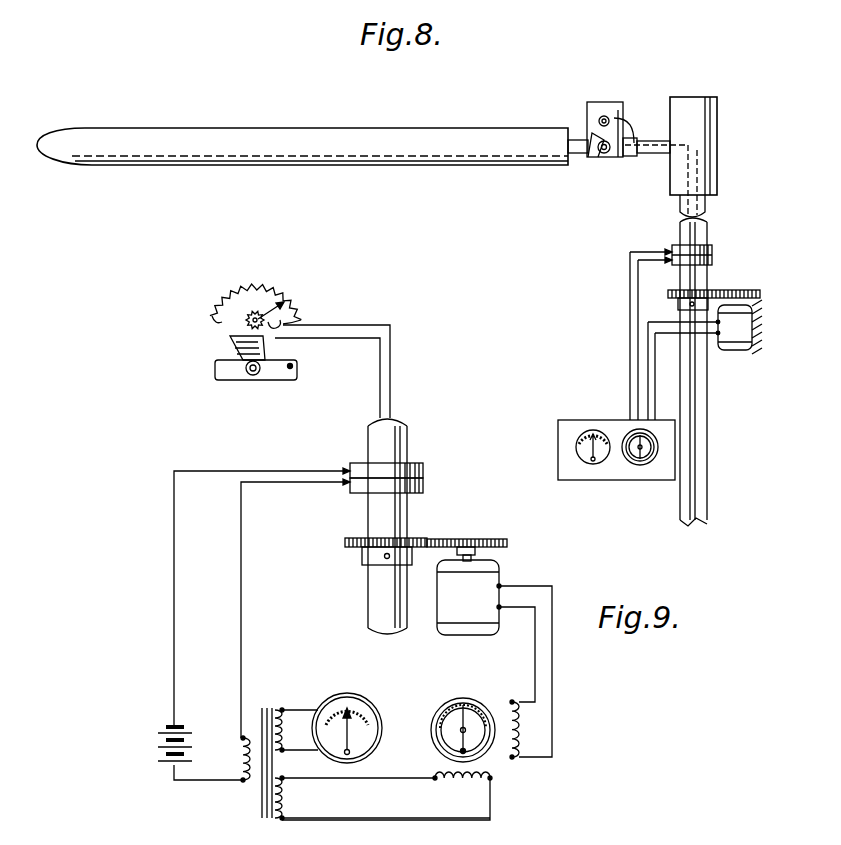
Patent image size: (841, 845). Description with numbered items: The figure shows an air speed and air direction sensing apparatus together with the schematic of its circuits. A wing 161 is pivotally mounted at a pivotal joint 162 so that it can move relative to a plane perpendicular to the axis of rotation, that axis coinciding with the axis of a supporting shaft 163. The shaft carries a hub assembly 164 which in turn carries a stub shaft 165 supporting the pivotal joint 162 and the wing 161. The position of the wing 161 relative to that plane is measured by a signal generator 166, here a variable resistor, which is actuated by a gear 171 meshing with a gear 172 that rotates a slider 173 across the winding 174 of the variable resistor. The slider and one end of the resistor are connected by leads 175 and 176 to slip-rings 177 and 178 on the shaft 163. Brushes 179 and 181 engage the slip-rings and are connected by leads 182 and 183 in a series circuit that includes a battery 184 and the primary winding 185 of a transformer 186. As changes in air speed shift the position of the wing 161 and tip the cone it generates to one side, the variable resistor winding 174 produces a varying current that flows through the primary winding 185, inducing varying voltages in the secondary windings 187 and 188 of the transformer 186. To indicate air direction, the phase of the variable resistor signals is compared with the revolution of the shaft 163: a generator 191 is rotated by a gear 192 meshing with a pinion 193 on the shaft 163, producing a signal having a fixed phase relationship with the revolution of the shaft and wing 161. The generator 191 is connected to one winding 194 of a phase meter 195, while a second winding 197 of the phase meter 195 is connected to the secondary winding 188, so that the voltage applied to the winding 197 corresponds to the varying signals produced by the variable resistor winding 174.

In FIG. 8, the wing 161 is at (313, 127).
In FIG. 8, the pivotal joint 162 is at (598, 159).
In FIG. 8, the supporting shaft 163 is at (707, 404).
In FIG. 8, the hub assembly 164 is at (717, 110).
In FIG. 8, the stub shaft 165 is at (631, 160).
In FIG. 8, the signal generator 166 is at (603, 101).
In FIG. 8, the gear 171 is at (230, 344).
In FIG. 8, the gear 172 is at (244, 320).
In FIG. 8, the slider 173 is at (268, 296).
In FIG. 8, the winding of the variable resistor 174 is at (228, 295).
In FIG. 8, the lead 175 is at (391, 366).
In FIG. 8, the lead 176 is at (379, 382).
In FIG. 8, the slip-ring 177 is at (425, 468).
In FIG. 8, the slip-ring 178 is at (425, 484).
In FIG. 8, the brush 179 is at (344, 465).
In FIG. 8, the brush 181 is at (346, 490).
In FIG. 8, the lead 182 is at (198, 468).
In FIG. 8, the lead 183 is at (260, 488).
In FIG. 9, the battery 184 is at (152, 749).
In FIG. 9, the primary winding 185 is at (243, 767).
In FIG. 9, the transformer 186 is at (272, 707).
In FIG. 9, the secondary winding 187 is at (308, 710).
In FIG. 8, the secondary winding 188 is at (590, 430).
In FIG. 9, the secondary winding 188 is at (372, 706).
In FIG. 8, the generator 191 is at (500, 581).
In FIG. 8, the gear 192 is at (506, 537).
In FIG. 8, the pinion 193 is at (345, 551).
In FIG. 9, the winding of the phase meter 194 is at (522, 722).
In FIG. 8, the phase meter 195 is at (642, 466).
In FIG. 9, the phase meter 195 is at (474, 706).
In FIG. 9, the secondary winding of the phase meter 197 is at (478, 782).